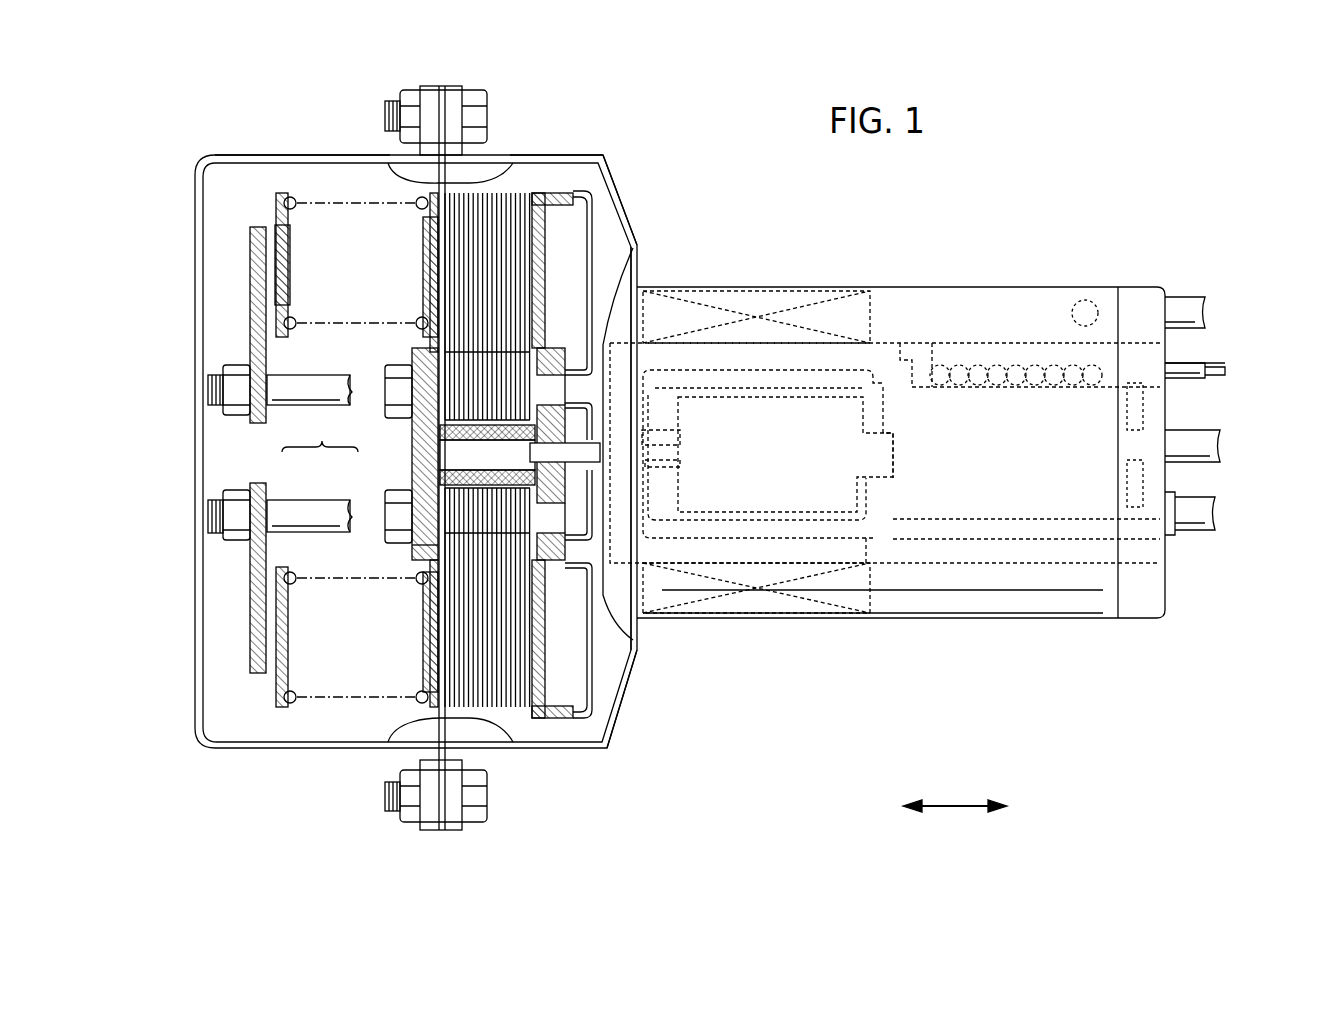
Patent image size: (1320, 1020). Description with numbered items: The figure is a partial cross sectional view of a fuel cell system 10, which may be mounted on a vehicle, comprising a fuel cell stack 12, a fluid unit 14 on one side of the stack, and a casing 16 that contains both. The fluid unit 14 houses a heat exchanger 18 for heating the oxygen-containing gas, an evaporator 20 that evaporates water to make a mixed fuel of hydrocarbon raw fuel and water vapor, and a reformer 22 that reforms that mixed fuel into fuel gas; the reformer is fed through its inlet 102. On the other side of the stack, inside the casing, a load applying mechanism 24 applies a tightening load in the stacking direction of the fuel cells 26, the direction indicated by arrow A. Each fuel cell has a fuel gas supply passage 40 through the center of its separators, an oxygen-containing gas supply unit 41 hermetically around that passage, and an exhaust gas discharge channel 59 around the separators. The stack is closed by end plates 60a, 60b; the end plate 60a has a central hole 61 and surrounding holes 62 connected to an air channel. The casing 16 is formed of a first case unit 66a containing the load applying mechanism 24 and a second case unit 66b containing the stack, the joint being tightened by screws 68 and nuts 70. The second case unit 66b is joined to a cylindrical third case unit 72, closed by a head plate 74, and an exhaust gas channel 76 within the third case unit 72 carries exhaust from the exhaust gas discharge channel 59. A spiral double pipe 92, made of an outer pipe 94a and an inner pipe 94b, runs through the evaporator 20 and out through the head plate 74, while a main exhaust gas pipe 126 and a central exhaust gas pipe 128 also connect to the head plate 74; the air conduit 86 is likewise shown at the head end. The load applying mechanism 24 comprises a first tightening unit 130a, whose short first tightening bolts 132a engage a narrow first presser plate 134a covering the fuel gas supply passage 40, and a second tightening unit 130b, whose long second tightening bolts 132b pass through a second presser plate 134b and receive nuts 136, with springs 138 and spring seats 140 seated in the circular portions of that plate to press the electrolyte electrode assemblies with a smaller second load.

The fuel cell system 10 is at (1064, 141).
The fuel cell stack 12 is at (530, 175).
The fluid unit 14 is at (1007, 282).
The casing 16 is at (646, 208).
The heat exchanger 18 is at (822, 316).
The evaporator 20 is at (1017, 356).
The reformer 22 is at (843, 420).
The load applying mechanism 24 is at (320, 432).
The fuel cell 26 is at (614, 703).
The fuel gas supply passage 40 is at (452, 454).
The oxygen-containing gas supply unit 41 is at (412, 548).
The exhaust gas discharge channel 59 is at (538, 745).
The end plate 60a is at (607, 258).
The end plate 60b is at (437, 716).
The hole 61 is at (572, 483).
The holes 62 is at (572, 512).
The first case unit 66a is at (298, 160).
The second case unit 66b is at (535, 160).
The screws 68 is at (468, 95).
The nuts 70 is at (392, 118).
The third case unit 72 is at (795, 605).
The head plate 74 is at (1133, 618).
The exhaust gas channel 76 is at (612, 665).
The connector 86 is at (1180, 317).
The double pipe 92 is at (1191, 357).
The outer pipe 94a is at (1190, 380).
The inner pipe 94b is at (1222, 378).
The inlet 102 is at (600, 445).
The main exhaust gas pipe 126 is at (1202, 523).
The exhaust gas pipe 128 is at (1195, 449).
The first tightening unit 130a is at (410, 473).
The second tightening unit 130b is at (272, 537).
The first tightening bolts 132a is at (392, 383).
The second tightening bolts 132b is at (208, 391).
The first presser plate 134a is at (417, 431).
The second presser plate 134b is at (258, 312).
The nuts 136 is at (236, 512).
The springs 138 is at (290, 703).
The spring seats 140 is at (420, 628).